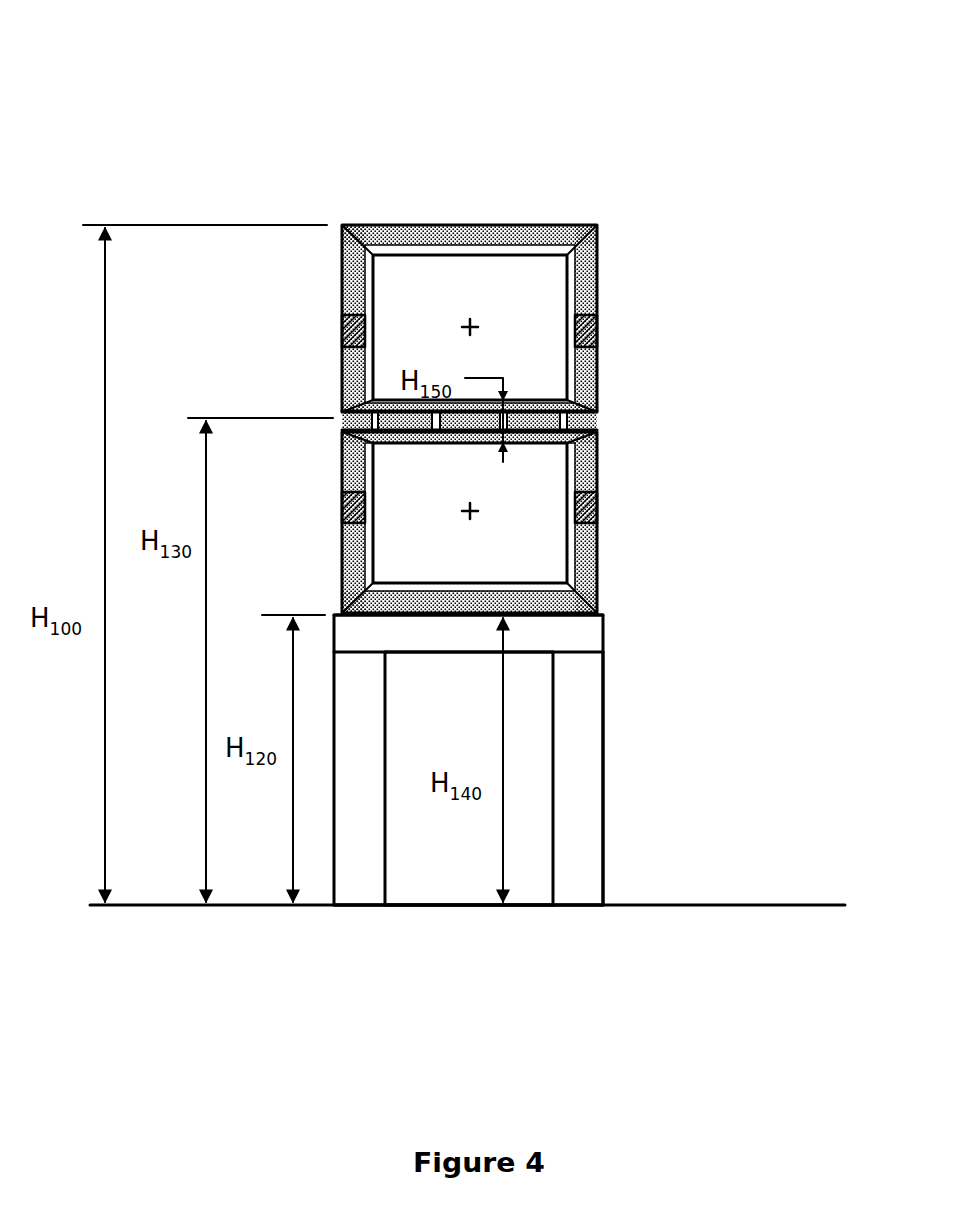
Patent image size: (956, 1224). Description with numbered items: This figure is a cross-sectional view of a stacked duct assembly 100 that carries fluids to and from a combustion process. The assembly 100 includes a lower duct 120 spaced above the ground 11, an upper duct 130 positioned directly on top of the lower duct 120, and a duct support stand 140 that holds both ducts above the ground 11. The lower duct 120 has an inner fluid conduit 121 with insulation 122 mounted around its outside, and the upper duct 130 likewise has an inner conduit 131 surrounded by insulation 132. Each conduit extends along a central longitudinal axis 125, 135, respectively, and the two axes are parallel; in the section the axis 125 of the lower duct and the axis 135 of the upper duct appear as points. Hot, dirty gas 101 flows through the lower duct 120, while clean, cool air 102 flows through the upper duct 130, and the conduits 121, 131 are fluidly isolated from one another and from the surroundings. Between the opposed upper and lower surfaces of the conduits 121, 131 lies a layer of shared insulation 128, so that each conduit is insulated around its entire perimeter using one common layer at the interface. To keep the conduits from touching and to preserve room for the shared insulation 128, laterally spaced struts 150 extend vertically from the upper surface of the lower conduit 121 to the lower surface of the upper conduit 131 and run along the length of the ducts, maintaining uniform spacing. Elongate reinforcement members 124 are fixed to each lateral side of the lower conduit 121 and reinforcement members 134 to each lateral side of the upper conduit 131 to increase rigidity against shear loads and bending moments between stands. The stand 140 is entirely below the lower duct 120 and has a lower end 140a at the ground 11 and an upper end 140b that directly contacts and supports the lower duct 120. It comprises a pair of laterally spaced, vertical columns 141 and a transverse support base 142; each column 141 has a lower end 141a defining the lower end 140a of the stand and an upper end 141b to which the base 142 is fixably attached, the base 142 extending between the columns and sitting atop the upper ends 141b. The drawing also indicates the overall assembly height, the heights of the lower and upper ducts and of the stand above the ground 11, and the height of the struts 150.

The stacked duct assembly 100 is at (203, 100).
The ground 11 is at (788, 898).
The duct support stand 140 is at (685, 722).
The column 141 is at (585, 781).
The support base 142 is at (408, 640).
The lower end of stand 140a is at (593, 893).
The lower end of column 141a is at (594, 931).
The upper end of stand 140b is at (606, 618).
The upper end of column 141b is at (590, 676).
The lower duct 120 is at (492, 518).
The inner fluid conduit of lower duct 121 is at (577, 467).
The insulation of lower duct 122 is at (586, 537).
The reinforcement member 124 is at (342, 507).
The longitudinal axis of lower duct 125 is at (463, 508).
The hot gas 101 is at (472, 568).
The strut 150 is at (427, 420).
The shared insulation 128 is at (560, 420).
The upper duct 130 is at (493, 280).
The inner conduit of upper duct 131 is at (418, 250).
The insulation of upper duct 132 is at (500, 234).
The reinforcement member 134 is at (342, 335).
The longitudinal axis of upper duct 135 is at (463, 322).
The clean air 102 is at (532, 306).